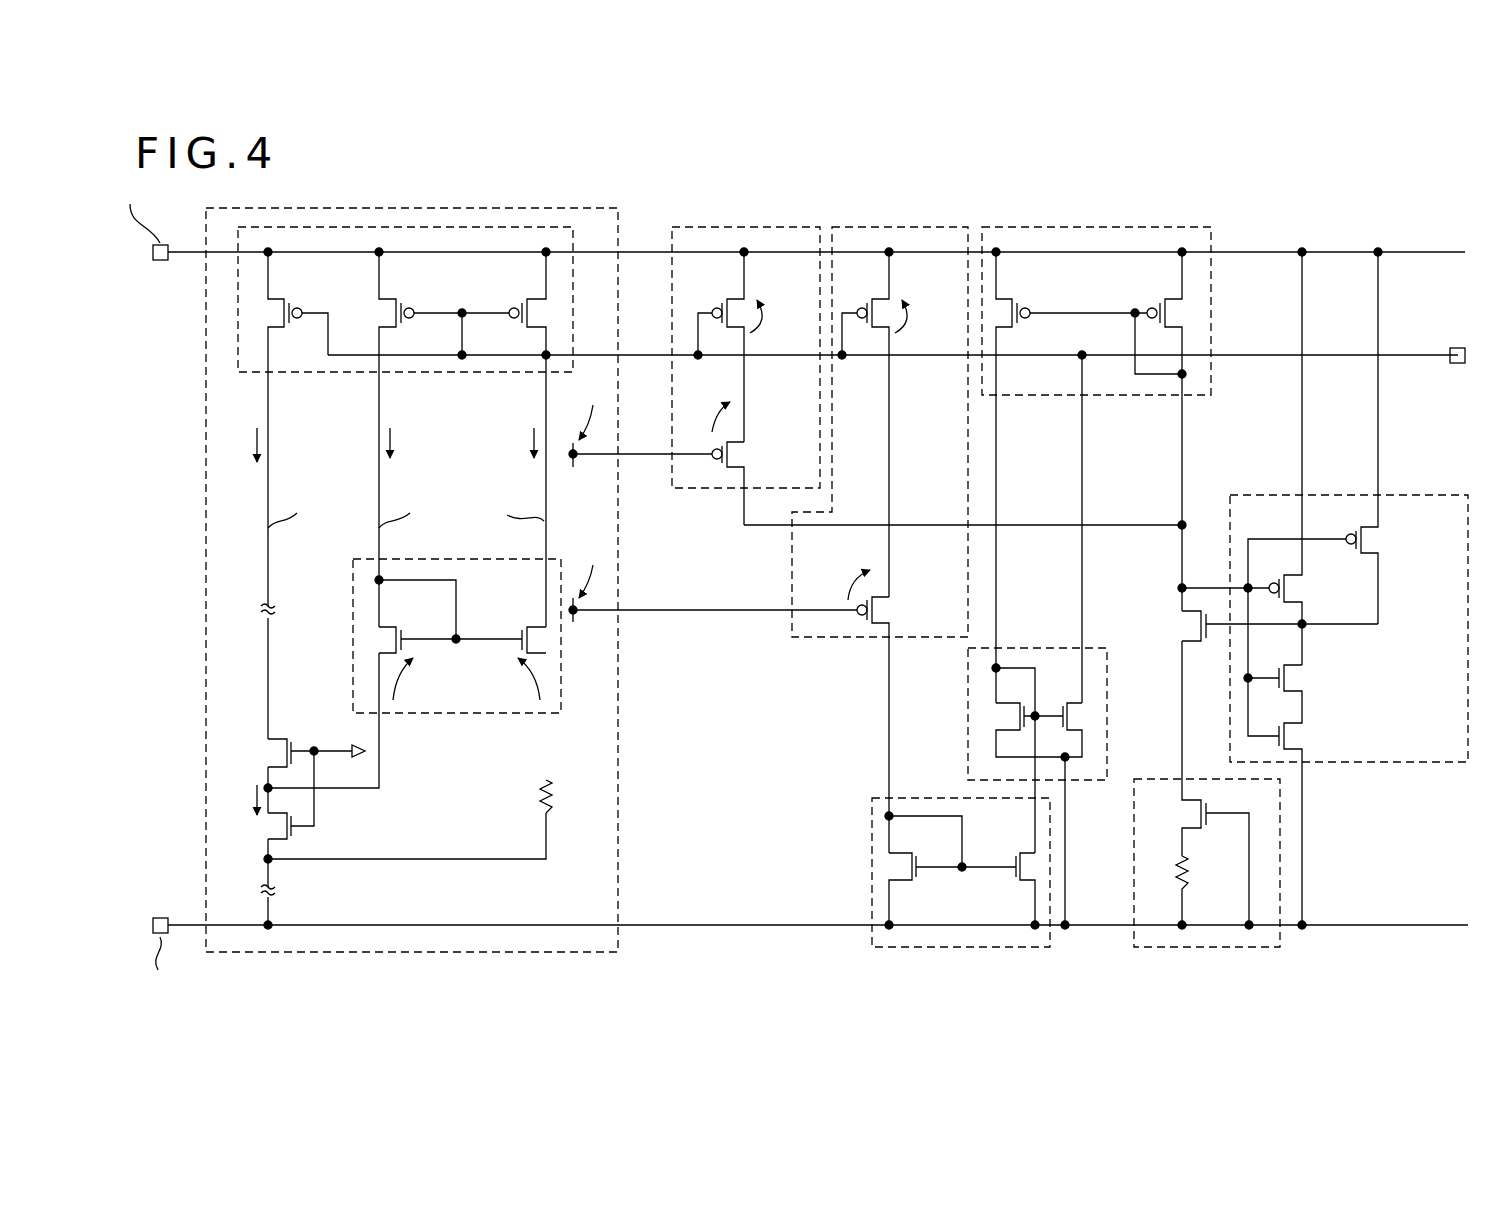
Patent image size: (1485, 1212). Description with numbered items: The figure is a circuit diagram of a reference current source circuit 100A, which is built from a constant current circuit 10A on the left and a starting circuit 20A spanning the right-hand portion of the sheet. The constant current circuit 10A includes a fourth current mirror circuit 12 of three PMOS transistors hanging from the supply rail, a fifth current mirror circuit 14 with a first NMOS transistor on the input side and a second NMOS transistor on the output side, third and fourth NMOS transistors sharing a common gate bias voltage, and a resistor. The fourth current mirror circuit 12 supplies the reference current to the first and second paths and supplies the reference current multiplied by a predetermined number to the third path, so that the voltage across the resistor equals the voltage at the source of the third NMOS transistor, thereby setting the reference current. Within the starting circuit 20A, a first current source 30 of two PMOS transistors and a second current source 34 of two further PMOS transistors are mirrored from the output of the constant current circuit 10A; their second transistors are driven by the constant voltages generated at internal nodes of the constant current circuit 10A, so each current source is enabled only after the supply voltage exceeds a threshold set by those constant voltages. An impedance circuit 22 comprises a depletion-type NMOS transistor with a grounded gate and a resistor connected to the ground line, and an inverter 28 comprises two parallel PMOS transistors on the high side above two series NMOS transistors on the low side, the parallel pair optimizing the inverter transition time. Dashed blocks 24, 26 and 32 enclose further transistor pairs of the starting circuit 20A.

The reference current source circuit 100A is at (1449, 142).
The constant current circuit 10A is at (533, 208).
The fourth current mirror circuit 12 is at (330, 373).
The fifth current mirror circuit 14 is at (500, 715).
The starting circuit 20A is at (1465, 958).
The impedance circuit 22 is at (1134, 860).
The current mirror circuit 24 is at (1138, 226).
The current mirror circuit 26 is at (1108, 702).
The inverter 28 is at (1435, 495).
The first current source 30 is at (943, 226).
The current mirror circuit 32 is at (872, 880).
The second current source 34 is at (777, 226).